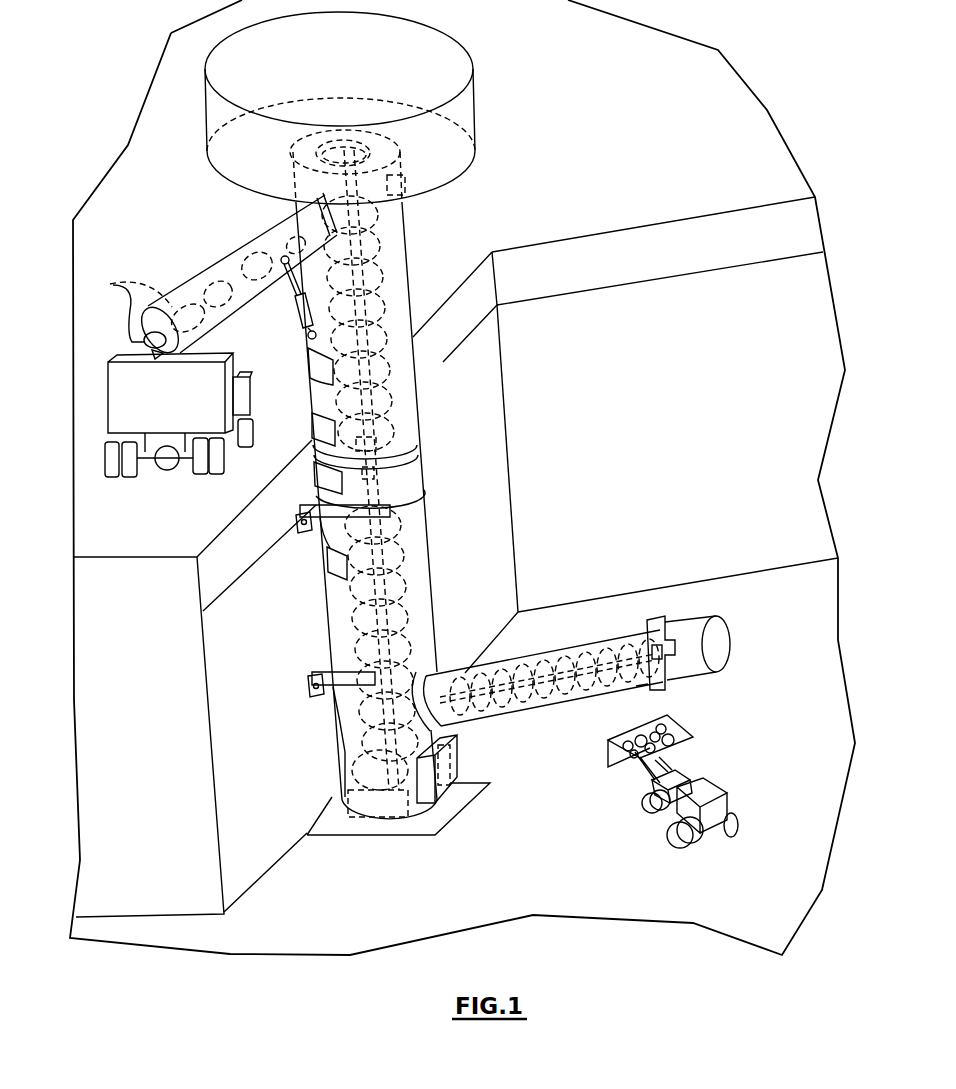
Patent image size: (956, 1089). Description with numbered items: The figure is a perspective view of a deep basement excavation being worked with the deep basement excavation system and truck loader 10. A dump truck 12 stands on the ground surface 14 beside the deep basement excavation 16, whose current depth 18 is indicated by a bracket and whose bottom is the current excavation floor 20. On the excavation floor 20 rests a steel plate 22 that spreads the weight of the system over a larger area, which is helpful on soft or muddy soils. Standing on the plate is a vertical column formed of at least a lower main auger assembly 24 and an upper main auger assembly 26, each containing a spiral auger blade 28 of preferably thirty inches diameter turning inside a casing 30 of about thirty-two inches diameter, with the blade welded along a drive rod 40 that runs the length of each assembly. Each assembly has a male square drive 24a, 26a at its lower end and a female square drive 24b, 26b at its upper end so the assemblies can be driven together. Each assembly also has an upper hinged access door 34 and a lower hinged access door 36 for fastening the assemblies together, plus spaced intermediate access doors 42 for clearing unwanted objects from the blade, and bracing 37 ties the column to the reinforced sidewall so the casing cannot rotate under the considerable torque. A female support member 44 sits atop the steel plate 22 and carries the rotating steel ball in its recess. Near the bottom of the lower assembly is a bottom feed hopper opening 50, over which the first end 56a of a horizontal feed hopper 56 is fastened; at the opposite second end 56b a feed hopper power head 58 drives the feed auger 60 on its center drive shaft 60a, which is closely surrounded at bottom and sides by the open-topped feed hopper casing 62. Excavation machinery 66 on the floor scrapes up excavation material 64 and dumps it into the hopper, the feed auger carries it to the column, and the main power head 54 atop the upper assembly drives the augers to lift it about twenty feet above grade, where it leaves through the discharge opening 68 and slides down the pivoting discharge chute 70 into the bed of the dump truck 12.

The deep basement excavation system and truck loader 10 is at (575, 152).
The dump truck 12 is at (200, 404).
The ground surface 14 is at (612, 233).
The deep basement excavation 16 is at (765, 282).
The current depth 18 is at (509, 312).
The excavation floor 20 is at (808, 600).
The steel plate 22 is at (440, 820).
The lower main auger assembly 24 is at (327, 620).
The male square drive 24a is at (340, 768).
The female square drive 24b is at (412, 470).
The upper main auger assembly 26 is at (407, 248).
The male square drive 26a is at (388, 414).
The female square drive 26b is at (372, 142).
The auger blade 28 is at (410, 264).
The casing 30 is at (405, 218).
The upper hinged access door 34 is at (405, 175).
The lower hinged access door 36 is at (313, 432).
The bracing 37 is at (328, 555).
The drive rod 40 is at (408, 294).
The intermediate access door 42 is at (311, 363).
The female support member 44 is at (374, 820).
The bottom feed hopper opening 50 is at (478, 662).
The main power head 54 is at (487, 57).
The feed hopper 56 is at (595, 628).
The first end 56a is at (445, 668).
The second end 56b is at (648, 622).
The feed hopper power head 58 is at (718, 644).
The feed auger 60 is at (568, 700).
The center drive shaft 60a is at (587, 693).
The feed hopper casing 62 is at (630, 688).
The excavation material 64 is at (733, 738).
The excavation machinery 66 is at (710, 817).
The discharge opening 68 is at (335, 228).
The pivoting discharge chute 70 is at (195, 232).